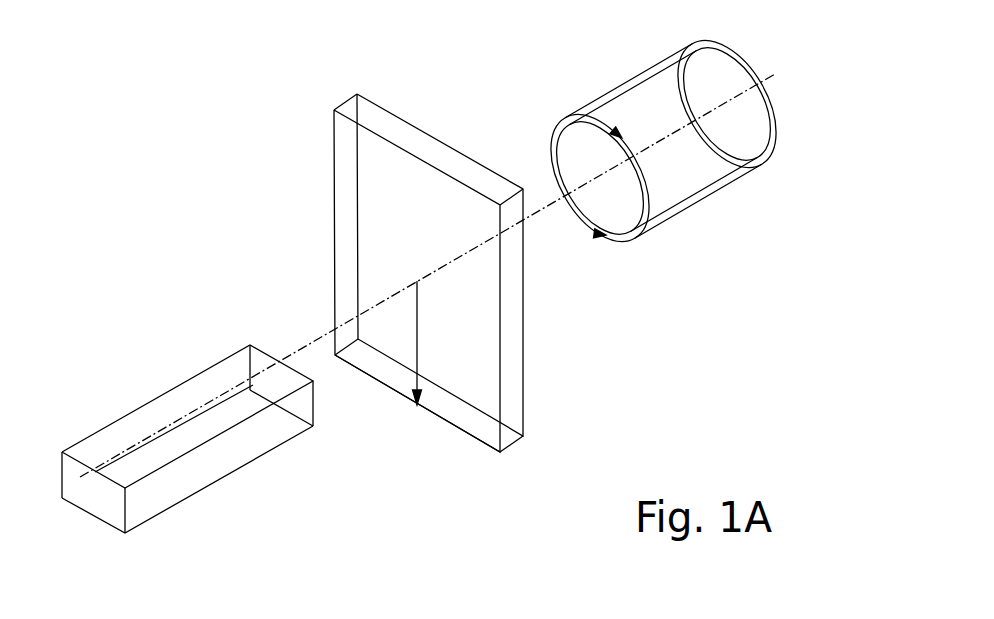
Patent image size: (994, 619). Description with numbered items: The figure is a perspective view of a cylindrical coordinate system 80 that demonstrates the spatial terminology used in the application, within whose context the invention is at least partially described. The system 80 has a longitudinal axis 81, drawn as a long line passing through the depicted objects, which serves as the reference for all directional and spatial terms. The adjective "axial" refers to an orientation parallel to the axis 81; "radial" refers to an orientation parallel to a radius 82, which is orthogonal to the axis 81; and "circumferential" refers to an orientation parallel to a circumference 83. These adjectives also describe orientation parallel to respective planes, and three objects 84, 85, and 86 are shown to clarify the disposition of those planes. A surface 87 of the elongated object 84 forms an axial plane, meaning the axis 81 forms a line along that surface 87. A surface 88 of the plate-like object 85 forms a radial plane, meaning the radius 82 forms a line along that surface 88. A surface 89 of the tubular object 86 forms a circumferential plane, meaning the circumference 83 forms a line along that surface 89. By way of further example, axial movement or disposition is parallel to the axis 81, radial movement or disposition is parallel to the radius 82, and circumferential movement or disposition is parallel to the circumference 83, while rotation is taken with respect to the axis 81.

The cylindrical coordinate system 80 is at (284, 149).
The longitudinal axis 81 is at (758, 82).
The radius 82 is at (417, 337).
The circumference 83 is at (550, 138).
The object 84 is at (152, 520).
The object 85 is at (545, 450).
The object 86 is at (697, 217).
The surface 87 is at (147, 420).
The surface 88 is at (350, 232).
The surface 89 is at (630, 80).